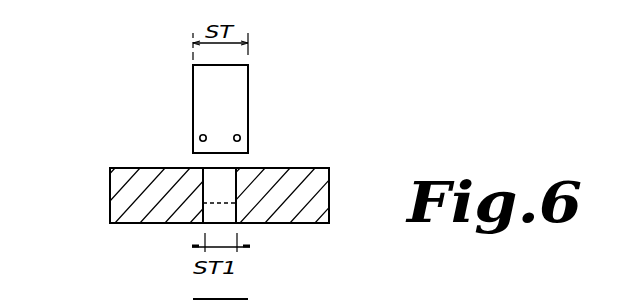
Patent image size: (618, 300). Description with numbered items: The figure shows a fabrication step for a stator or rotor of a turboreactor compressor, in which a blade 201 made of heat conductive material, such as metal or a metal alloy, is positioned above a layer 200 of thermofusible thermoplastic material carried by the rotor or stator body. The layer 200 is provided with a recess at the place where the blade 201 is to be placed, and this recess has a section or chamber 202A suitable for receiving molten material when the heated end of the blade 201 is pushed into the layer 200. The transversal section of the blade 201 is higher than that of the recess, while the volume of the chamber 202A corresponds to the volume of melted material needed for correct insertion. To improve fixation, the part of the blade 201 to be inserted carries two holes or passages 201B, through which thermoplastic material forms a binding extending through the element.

The layer 200 is at (329, 168).
The blade 201 is at (248, 104).
The holes or passages 201B is at (193, 140).
The chamber 202A is at (220, 187).